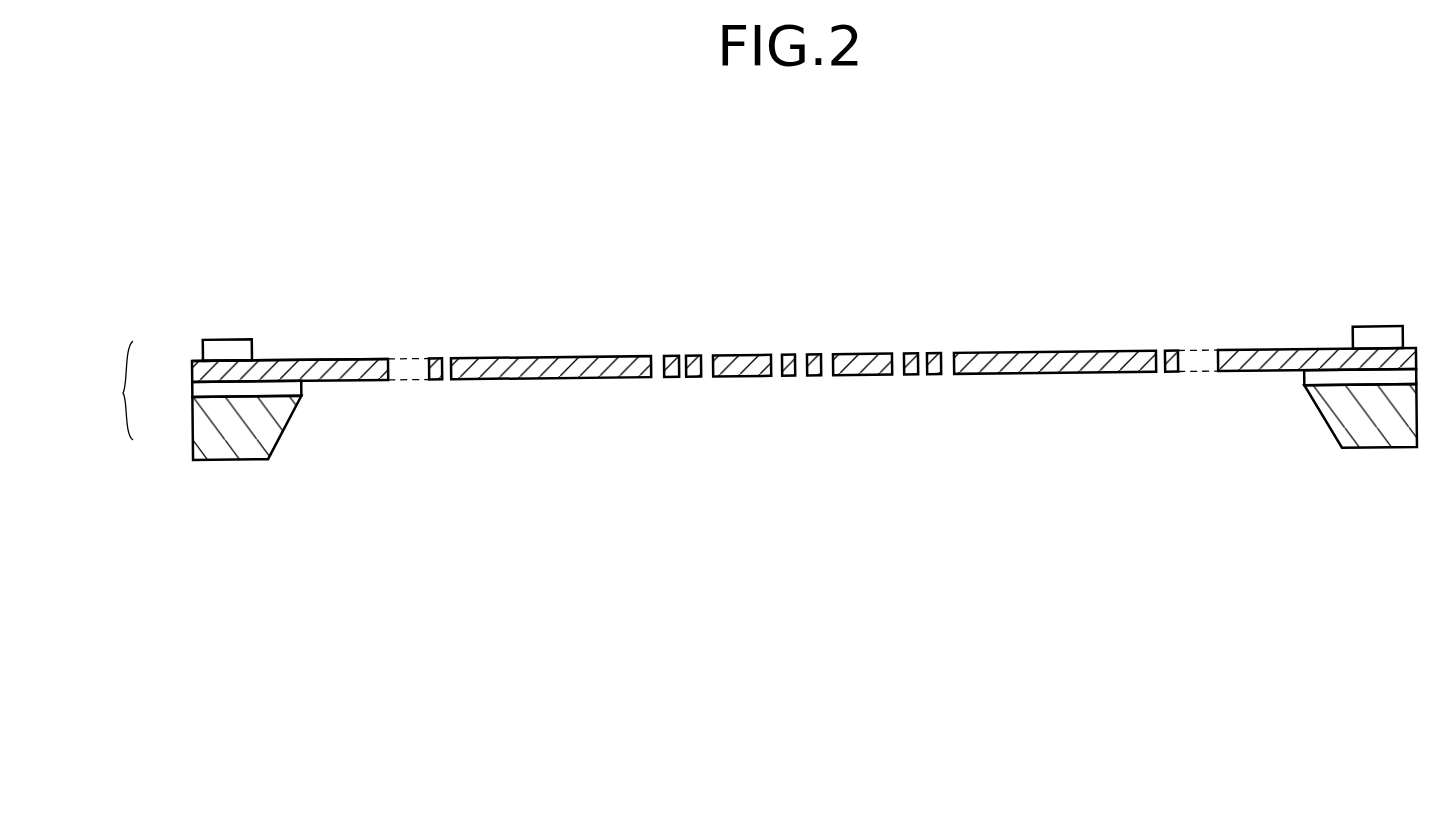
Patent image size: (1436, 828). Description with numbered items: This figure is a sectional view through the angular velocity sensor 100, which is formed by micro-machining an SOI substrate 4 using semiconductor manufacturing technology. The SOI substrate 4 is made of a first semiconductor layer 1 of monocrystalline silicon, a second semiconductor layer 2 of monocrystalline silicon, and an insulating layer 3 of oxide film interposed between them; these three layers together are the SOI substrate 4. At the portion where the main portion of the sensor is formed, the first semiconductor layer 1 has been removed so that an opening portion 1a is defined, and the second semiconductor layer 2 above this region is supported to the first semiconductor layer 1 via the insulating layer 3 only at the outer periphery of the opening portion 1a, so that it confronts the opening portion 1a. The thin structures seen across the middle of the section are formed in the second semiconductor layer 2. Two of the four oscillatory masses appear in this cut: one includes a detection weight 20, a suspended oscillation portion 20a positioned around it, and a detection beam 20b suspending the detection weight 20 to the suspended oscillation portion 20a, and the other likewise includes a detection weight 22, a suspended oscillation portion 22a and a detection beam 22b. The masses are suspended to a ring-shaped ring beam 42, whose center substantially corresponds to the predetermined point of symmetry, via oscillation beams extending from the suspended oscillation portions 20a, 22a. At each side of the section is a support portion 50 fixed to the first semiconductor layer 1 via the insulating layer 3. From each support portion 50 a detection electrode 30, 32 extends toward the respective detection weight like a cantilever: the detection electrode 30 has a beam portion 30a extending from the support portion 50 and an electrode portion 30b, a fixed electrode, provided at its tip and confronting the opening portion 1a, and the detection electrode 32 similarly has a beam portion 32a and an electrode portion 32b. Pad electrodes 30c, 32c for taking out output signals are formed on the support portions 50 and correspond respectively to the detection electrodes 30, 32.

The angular velocity sensor 100 is at (1100, 258).
The first semiconductor layer 1 is at (207, 428).
The opening portion 1a is at (1318, 410).
The second semiconductor layer 2 is at (192, 372).
The insulating layer 3 is at (200, 392).
The SOI substrate 4 is at (115, 390).
The detection weight 20 is at (1050, 350).
The suspended oscillation portion 20a is at (858, 353).
The detection beam 20b is at (934, 353).
The detection weight 22 is at (541, 358).
The suspended oscillation portion 22a is at (742, 355).
The detection beam 22b is at (694, 356).
The detection electrode 30 is at (1197, 375).
The beam portion 30a is at (1200, 348).
The electrode portion 30b is at (1171, 349).
The pad electrode 30c is at (1372, 326).
The detection electrode 32 is at (405, 385).
The beam portion 32a is at (412, 356).
The electrode portion 32b is at (432, 357).
The pad electrode 32c is at (226, 340).
The ring beam 42 is at (813, 355).
The support portion 50 is at (287, 361).